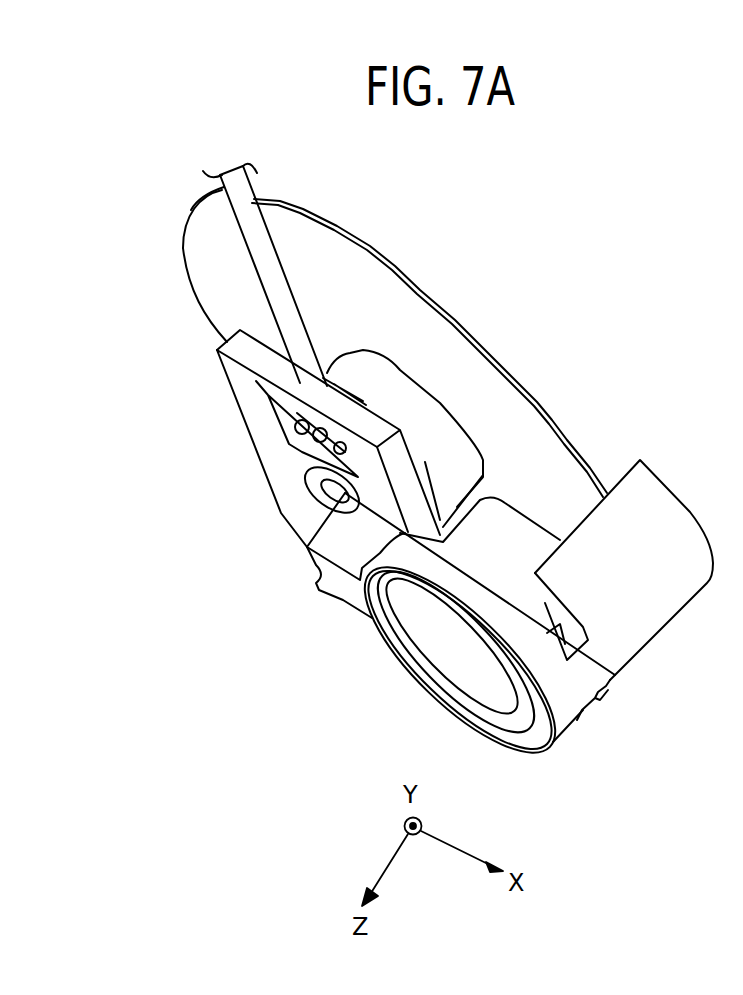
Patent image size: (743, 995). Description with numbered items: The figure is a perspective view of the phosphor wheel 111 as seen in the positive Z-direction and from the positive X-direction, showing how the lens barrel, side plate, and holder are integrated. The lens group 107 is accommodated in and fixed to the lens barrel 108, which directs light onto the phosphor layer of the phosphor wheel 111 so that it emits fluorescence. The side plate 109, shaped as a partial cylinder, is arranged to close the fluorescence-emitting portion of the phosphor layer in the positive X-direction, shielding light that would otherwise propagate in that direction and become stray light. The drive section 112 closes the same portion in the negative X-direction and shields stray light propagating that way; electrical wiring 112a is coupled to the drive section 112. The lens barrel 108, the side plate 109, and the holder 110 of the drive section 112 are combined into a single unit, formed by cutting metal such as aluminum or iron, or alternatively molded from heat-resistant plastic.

The lens group 107 is at (473, 642).
The lens barrel 108 is at (513, 547).
The side plate 109 is at (642, 537).
The holder 110 is at (288, 490).
The phosphor wheel 111 is at (215, 276).
The drive section 112 is at (423, 420).
The electrical wiring 112a is at (263, 250).